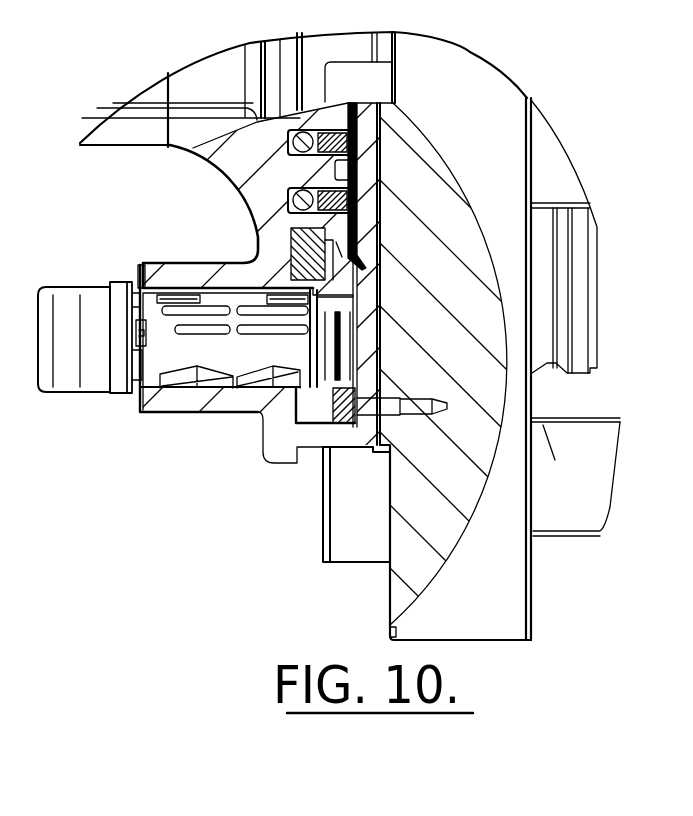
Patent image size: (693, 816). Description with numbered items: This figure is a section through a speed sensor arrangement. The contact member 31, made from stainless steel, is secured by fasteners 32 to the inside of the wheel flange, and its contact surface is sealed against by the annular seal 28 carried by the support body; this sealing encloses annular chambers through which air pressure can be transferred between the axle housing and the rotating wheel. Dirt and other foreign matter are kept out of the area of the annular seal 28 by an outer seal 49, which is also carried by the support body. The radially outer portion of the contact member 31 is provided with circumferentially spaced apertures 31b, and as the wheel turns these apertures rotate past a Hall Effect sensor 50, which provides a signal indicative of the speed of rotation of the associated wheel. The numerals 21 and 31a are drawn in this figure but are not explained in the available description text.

The bearing 21 is at (352, 152).
The annular seal 28 is at (352, 202).
The contact member 31 is at (362, 148).
The flange face 31a is at (363, 388).
The circumferentially spaced apertures 31b is at (362, 333).
The fastener 32 is at (347, 407).
The outer seal 49 is at (290, 242).
The Hall Effect sensor 50 is at (245, 350).